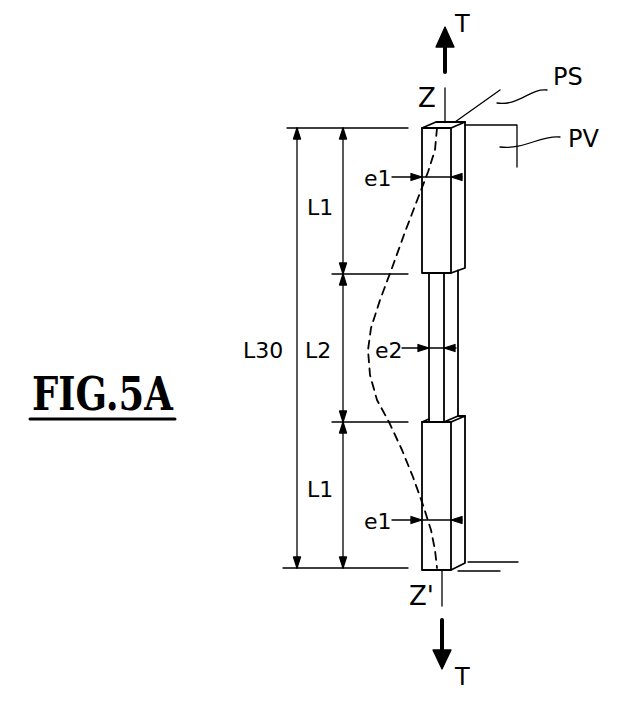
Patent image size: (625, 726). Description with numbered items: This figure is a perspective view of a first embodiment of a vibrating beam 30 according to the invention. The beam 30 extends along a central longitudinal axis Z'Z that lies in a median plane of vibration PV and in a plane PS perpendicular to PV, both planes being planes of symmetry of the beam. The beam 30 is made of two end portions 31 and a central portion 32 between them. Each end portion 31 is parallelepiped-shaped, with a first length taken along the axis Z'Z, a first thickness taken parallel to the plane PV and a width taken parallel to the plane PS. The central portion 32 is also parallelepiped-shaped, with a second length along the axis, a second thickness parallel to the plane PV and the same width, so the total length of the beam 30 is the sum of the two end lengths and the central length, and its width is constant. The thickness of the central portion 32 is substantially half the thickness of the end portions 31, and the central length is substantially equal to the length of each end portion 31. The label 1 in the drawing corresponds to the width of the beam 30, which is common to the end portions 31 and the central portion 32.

The vibrating beam 30 is at (421, 298).
The end portion 31 is at (459, 225).
The central portion 32 is at (453, 320).
The width of specimen 1 is at (473, 578).